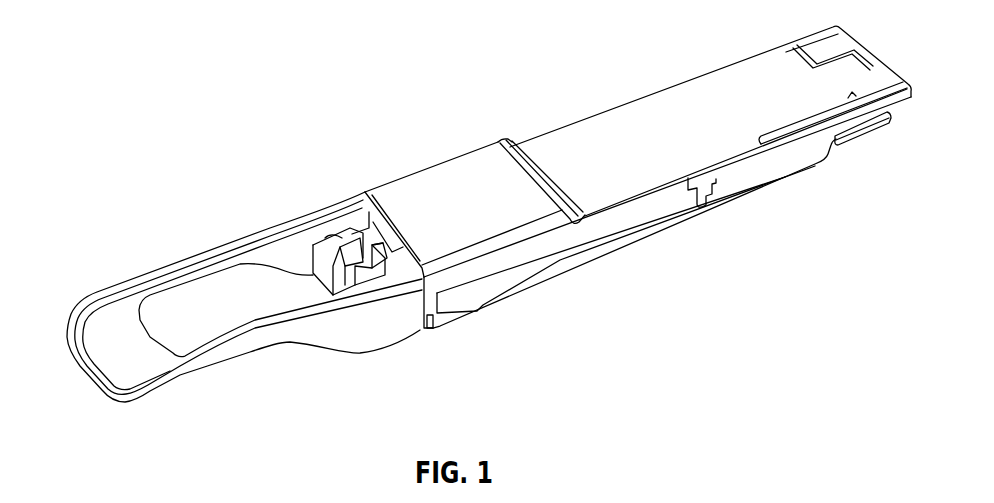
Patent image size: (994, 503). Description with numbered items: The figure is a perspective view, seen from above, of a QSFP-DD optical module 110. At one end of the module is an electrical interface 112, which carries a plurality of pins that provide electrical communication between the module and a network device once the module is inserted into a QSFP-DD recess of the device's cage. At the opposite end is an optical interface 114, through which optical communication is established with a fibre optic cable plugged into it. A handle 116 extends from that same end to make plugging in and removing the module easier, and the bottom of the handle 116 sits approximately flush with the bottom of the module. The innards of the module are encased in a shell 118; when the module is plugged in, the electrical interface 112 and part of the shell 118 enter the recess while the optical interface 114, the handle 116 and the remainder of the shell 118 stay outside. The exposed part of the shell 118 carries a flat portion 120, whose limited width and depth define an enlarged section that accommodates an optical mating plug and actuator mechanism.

The QSFP-DD optical module 110 is at (218, 54).
The electrical interface 112 is at (858, 127).
The optical interface 114 is at (313, 274).
The handle 116 is at (123, 357).
The shell 118 is at (569, 126).
The flat portion 120 is at (436, 188).